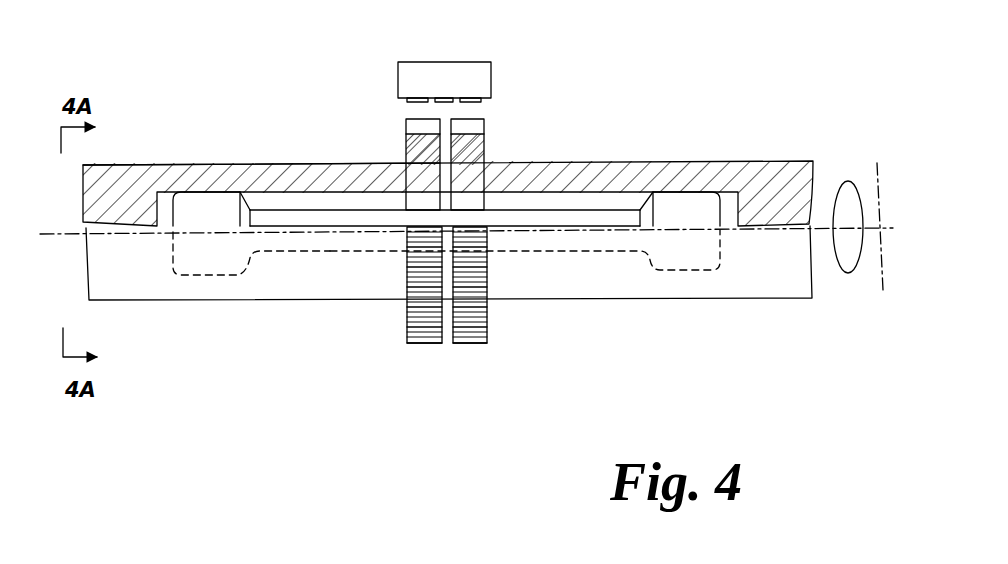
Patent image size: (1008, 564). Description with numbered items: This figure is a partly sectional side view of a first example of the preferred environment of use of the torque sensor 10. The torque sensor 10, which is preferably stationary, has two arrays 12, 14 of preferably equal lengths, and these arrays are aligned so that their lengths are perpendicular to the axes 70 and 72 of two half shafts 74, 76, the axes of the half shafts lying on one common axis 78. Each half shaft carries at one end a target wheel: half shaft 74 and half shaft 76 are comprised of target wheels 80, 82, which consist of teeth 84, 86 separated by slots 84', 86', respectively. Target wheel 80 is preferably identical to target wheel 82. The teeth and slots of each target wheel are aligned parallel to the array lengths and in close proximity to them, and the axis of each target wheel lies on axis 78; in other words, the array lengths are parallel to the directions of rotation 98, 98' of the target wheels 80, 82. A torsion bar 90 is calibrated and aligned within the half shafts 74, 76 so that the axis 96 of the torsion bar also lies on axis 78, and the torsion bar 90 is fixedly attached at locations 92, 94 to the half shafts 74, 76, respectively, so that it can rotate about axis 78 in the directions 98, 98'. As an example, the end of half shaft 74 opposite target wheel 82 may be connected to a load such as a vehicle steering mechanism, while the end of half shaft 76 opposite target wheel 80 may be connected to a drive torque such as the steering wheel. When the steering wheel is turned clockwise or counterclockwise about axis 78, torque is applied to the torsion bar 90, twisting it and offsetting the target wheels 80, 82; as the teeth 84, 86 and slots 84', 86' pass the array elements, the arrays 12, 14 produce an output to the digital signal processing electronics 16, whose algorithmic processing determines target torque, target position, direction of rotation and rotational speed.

The torque sensor 10 is at (412, 44).
The array 12 is at (398, 102).
The array 14 is at (492, 103).
The digital signal processing electronics 16 is at (452, 95).
The axis 70 is at (468, 276).
The axis 72 is at (58, 236).
The half shaft 74 is at (722, 162).
The half shaft 76 is at (172, 165).
The axis 78 is at (879, 214).
The target wheel 80 is at (423, 346).
The target wheel 82 is at (470, 347).
The teeth 84 is at (368, 229).
The slots 84' is at (360, 355).
The teeth 86 is at (511, 227).
The slots 86' is at (512, 352).
The torsion bar 90 is at (583, 254).
The location 92 is at (680, 191).
The location 94 is at (222, 192).
The axis 96 is at (165, 242).
The direction of rotation 98 is at (836, 195).
The direction of rotation 98' is at (841, 306).